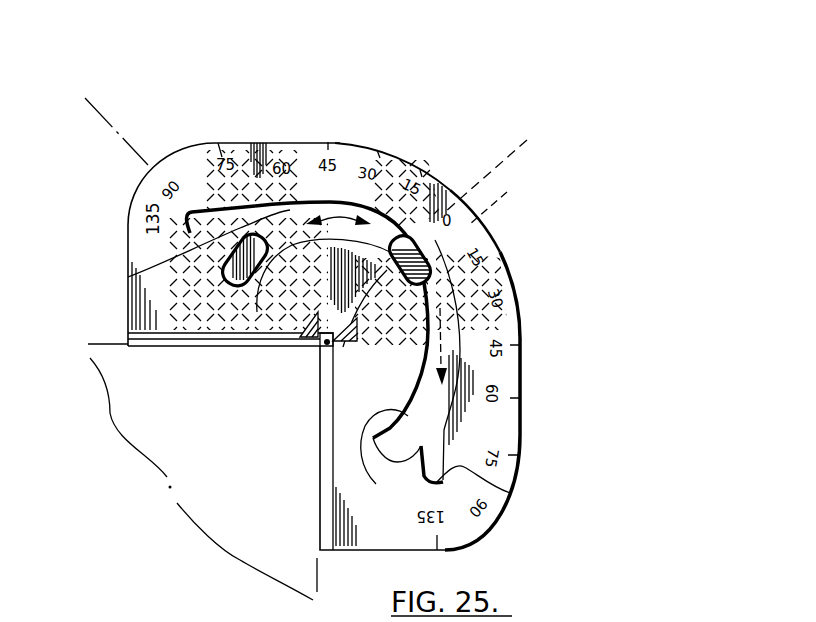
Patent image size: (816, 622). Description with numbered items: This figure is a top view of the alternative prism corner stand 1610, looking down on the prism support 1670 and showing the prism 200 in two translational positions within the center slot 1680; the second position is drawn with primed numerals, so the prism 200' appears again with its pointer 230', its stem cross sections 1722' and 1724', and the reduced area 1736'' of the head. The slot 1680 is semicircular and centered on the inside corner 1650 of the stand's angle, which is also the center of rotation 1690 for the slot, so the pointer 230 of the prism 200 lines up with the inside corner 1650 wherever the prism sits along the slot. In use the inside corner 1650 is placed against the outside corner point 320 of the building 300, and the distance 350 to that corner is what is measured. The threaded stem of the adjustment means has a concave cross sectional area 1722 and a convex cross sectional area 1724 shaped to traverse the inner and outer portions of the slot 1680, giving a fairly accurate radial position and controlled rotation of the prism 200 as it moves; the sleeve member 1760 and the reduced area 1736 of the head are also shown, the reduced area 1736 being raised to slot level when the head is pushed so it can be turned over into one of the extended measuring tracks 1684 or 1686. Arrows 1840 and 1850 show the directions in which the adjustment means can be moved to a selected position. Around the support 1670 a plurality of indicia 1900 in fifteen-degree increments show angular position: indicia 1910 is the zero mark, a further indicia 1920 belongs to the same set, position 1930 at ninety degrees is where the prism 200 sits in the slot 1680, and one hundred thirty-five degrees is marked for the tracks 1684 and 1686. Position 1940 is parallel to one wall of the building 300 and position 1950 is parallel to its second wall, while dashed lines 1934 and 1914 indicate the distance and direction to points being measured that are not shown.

The alternative prism corner stand 1610 is at (634, 155).
The dashed line 1934 is at (97, 105).
The ninety degree position 1930 is at (165, 180).
The extended measuring slot/track 1686 is at (214, 212).
The prism (second position) 200' is at (341, 186).
The arrows 1840 is at (336, 207).
The angle indicator 1920 is at (378, 157).
The zero degree mark 1910 is at (455, 210).
The dashed line 1914 is at (527, 140).
The position 1940 is at (128, 222).
The convex cross sectional area (second position) 1724' is at (152, 250).
The reduced area (second position) 1736'' is at (201, 315).
The reduced area 1736 is at (480, 227).
The convex cross sectional area 1724 is at (429, 270).
The prism 200 is at (543, 229).
The arrows 1850 is at (437, 319).
The prism support 1670 is at (508, 371).
The plurality of indicia 1900 is at (505, 399).
The semicircular radial slot 1680 is at (401, 455).
The extended measuring slot/track 1684 is at (510, 493).
The position 1950 is at (437, 555).
The sleeve member 1760 is at (393, 528).
The pointer 230 is at (398, 358).
The concave cross sectional area 1722 is at (374, 347).
The concave cross sectional area (second position) 1722' is at (259, 356).
The pointer (second position) 230' is at (270, 392).
The inside corner 1650 is at (317, 348).
The center of rotation 1690 is at (284, 403).
The outside corner point 320 is at (224, 418).
The building 300 is at (183, 405).
The distance to be measured 350 is at (53, 620).